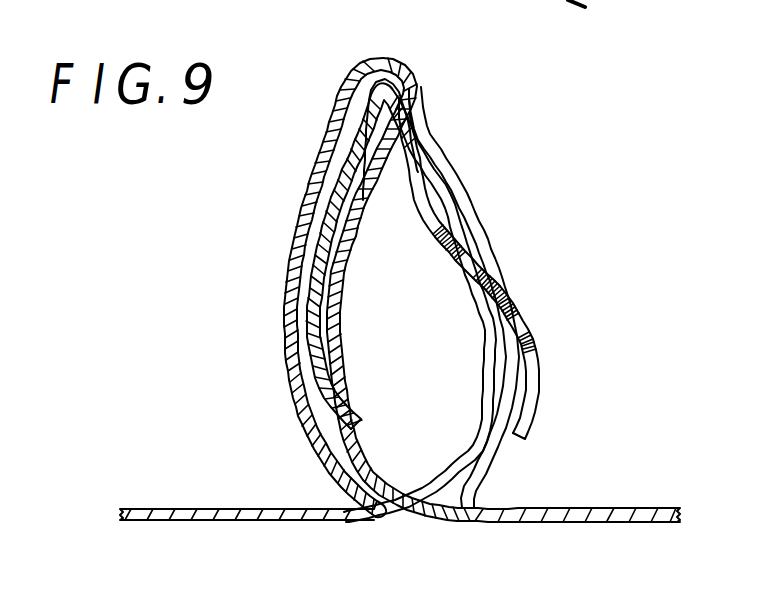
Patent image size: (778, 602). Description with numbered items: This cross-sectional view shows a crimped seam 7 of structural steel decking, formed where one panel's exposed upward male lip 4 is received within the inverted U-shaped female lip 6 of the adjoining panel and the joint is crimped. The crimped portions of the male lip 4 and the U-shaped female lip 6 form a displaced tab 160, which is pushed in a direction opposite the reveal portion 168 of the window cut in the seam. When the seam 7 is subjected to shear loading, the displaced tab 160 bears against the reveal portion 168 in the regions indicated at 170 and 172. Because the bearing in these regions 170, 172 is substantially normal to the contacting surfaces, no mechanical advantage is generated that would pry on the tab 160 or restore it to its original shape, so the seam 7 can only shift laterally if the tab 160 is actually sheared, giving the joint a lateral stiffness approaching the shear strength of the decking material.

The seam 7 is at (338, 62).
The male lip 4 is at (313, 320).
The female lip 6 is at (292, 378).
The displaced tab 160 is at (305, 210).
The reveal portion 168 is at (486, 178).
The bearing region 170 is at (437, 62).
The bearing region 172 is at (497, 470).